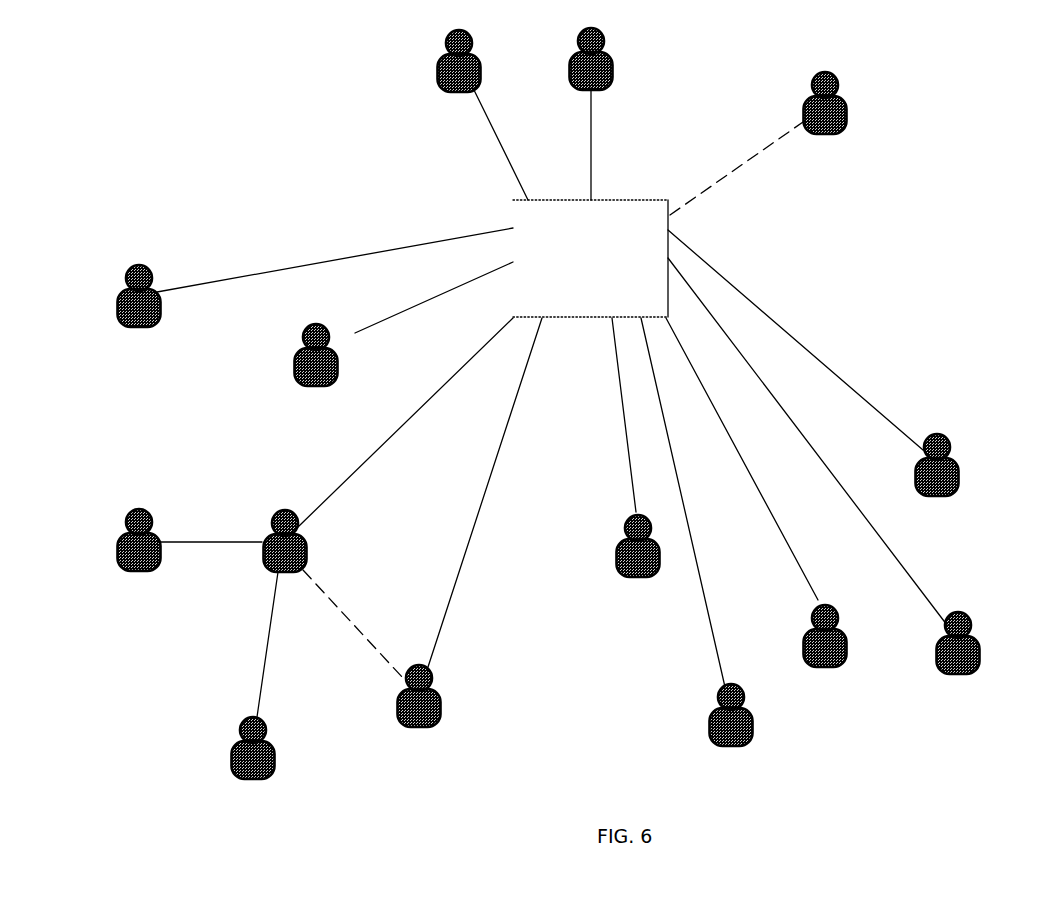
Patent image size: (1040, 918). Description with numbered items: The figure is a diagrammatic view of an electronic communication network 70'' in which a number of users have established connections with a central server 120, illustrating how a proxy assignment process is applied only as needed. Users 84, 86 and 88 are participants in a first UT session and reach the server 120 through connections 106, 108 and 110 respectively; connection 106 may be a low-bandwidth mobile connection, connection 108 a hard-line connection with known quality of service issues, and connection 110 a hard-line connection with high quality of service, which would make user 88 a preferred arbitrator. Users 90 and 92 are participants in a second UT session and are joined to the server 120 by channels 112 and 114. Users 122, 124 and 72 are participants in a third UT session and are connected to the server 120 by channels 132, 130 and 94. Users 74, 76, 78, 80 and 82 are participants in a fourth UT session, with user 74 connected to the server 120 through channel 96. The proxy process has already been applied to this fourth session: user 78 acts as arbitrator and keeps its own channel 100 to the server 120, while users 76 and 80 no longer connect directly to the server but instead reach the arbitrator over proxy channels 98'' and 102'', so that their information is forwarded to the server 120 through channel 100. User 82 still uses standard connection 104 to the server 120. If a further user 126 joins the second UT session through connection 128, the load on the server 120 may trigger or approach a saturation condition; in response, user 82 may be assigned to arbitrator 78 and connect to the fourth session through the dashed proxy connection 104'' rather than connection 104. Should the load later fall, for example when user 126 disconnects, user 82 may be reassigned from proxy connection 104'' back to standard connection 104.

The communication network 70'' is at (108, 730).
The user 72 is at (107, 300).
The user 74 is at (286, 367).
The user 76 is at (115, 565).
The user 78 is at (262, 565).
The user 80 is at (232, 768).
The user 82 is at (397, 705).
The user 84 is at (615, 550).
The user 86 is at (708, 705).
The user 88 is at (807, 628).
The user 90 is at (940, 665).
The group 92 is at (967, 447).
The channel 94 is at (262, 273).
The channel 96 is at (366, 328).
The proxy channel 98'' is at (208, 499).
The channel 100 is at (330, 497).
The proxy channel 102'' is at (293, 644).
The connection 104 is at (485, 492).
The proxy connection 104'' is at (370, 621).
The connection 106 is at (628, 478).
The connection 108 is at (700, 573).
The connection 110 is at (763, 497).
The channel 112 is at (927, 595).
The channel 114 is at (887, 415).
The server 120 is at (632, 198).
The user 122 is at (440, 53).
The user 124 is at (606, 43).
The user 126 is at (842, 92).
The connection 128 is at (732, 168).
The channel 130 is at (588, 168).
The channel 132 is at (497, 143).